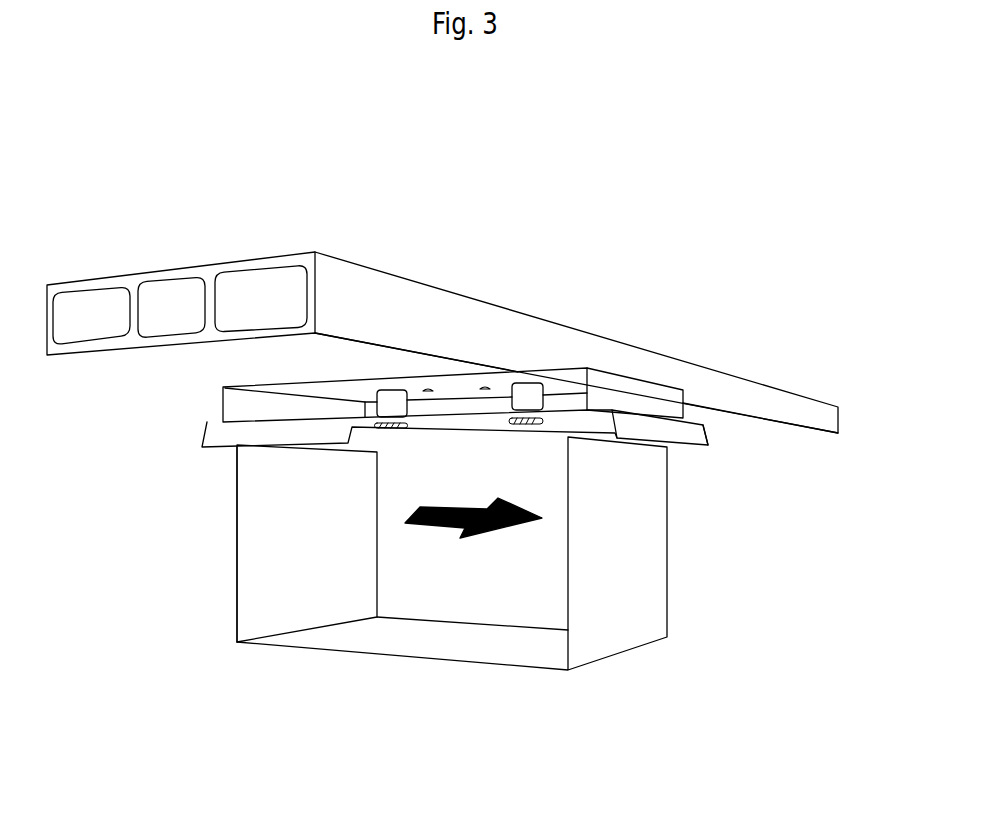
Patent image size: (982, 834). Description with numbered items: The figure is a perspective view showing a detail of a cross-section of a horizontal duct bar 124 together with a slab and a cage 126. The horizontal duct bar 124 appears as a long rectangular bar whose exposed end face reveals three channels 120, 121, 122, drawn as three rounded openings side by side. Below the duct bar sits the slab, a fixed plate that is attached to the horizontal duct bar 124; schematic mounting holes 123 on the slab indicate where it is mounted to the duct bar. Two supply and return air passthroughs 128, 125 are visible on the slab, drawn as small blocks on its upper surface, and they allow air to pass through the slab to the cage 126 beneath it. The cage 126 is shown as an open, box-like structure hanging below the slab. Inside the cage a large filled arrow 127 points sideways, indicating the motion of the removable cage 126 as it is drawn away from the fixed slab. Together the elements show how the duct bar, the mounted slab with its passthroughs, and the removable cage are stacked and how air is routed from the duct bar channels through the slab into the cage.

The channel of the horizontal duct bar 120 is at (87, 317).
The channel of the horizontal duct bar 121 is at (173, 307).
The channel of the horizontal duct bar 122 is at (265, 305).
The mounting holes 123 is at (428, 388).
The horizontal duct bar 124 is at (720, 393).
The air passthrough 125 is at (533, 402).
The cage 126 is at (483, 590).
The arrow 127 is at (433, 525).
The air passthrough 128 is at (395, 407).